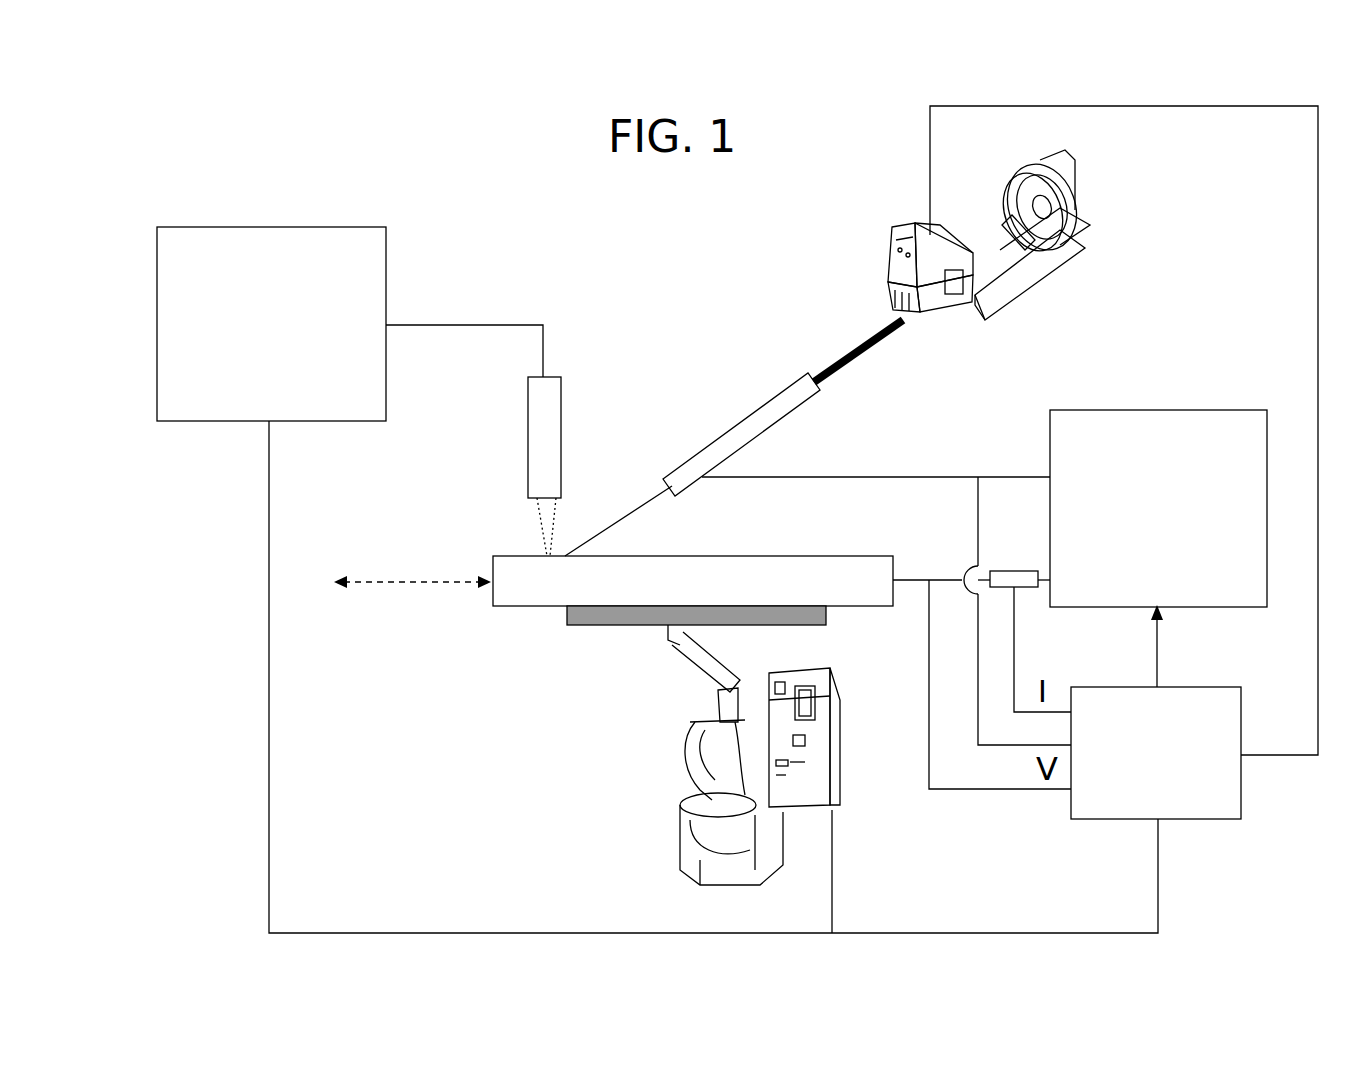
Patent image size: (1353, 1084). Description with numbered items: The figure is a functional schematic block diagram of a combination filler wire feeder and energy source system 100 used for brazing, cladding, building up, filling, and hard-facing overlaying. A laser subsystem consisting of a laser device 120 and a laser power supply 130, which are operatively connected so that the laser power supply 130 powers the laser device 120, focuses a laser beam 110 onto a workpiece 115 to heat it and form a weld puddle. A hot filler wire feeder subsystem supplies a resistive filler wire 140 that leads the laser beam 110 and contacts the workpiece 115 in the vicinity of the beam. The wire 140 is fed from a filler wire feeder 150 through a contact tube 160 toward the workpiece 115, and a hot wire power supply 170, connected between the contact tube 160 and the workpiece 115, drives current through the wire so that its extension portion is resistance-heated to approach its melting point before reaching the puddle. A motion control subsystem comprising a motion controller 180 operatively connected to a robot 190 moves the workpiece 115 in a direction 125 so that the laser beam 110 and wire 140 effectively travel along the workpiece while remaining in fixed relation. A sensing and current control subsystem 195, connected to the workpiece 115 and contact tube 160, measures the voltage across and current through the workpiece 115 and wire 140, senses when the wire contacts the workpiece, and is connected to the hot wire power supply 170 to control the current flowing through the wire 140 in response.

The combination filler wire feeder and energy source system 100 is at (148, 138).
The laser beam 110 is at (547, 523).
The workpiece 115 is at (757, 556).
The laser device 120 is at (528, 428).
The direction 125 is at (400, 582).
The laser power supply 130 is at (342, 227).
The resistive filler wire 140 is at (633, 512).
The filler wire feeder 150 is at (1013, 278).
The contact tube 160 is at (757, 413).
The hot wire power supply 170 is at (1080, 410).
The motion controller 180 is at (835, 717).
The robot 190 is at (698, 725).
The sensing and current control subsystem 195 is at (1103, 819).